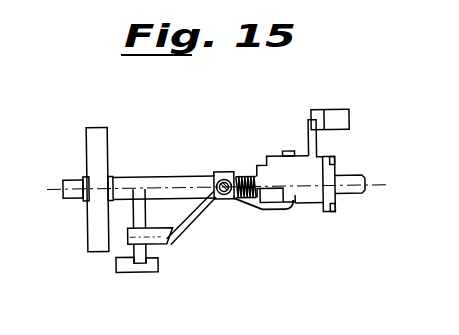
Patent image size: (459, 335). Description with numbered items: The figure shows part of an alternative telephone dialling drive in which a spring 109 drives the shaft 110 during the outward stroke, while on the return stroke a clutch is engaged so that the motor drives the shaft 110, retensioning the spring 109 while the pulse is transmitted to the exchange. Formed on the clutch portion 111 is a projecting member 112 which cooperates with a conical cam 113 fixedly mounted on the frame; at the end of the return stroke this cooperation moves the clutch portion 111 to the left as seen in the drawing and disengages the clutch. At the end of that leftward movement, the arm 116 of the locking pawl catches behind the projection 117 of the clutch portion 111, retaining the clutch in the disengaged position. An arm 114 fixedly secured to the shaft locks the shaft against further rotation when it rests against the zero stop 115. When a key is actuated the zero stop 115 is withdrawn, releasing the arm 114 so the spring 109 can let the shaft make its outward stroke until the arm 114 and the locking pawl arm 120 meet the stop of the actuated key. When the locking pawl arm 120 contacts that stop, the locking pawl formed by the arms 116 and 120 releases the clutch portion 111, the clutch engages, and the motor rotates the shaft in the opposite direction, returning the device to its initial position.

The spring 109 is at (98, 152).
The shaft 110 is at (155, 181).
The clutch portion 111 is at (292, 172).
The projecting member 112 is at (315, 137).
The conical cam 113 is at (318, 116).
The arm 114 is at (141, 208).
The zero stop 115 is at (129, 265).
The locking pawl arm 116 is at (262, 212).
The projection 117 is at (274, 202).
The locking pawl arm 120 is at (149, 235).